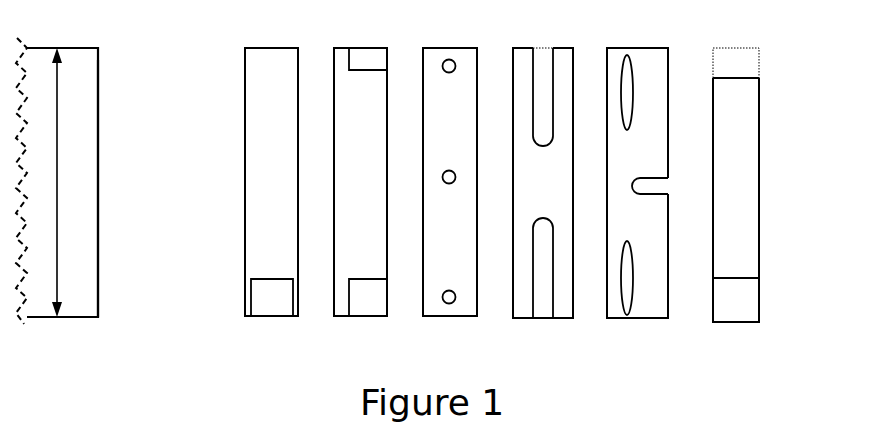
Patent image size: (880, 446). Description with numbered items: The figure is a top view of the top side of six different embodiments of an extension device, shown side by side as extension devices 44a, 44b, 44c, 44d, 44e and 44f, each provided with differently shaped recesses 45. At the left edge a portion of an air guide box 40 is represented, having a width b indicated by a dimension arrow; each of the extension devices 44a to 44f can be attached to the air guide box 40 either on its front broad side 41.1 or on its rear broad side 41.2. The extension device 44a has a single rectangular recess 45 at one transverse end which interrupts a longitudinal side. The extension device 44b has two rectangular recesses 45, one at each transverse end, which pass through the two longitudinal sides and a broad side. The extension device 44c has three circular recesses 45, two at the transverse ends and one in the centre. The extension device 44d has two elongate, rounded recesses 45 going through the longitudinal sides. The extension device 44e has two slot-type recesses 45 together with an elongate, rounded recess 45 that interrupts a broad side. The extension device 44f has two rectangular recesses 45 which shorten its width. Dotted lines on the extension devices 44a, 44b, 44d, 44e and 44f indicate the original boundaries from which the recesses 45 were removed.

The air guide box 40 is at (79, 46).
The front broad side 41.1 is at (100, 305).
The rear broad side 41.2 is at (137, 361).
The extension device 44a is at (272, 47).
The extension device 44b is at (343, 46).
The extension device 44c is at (449, 47).
The extension device 44d is at (522, 45).
The extension device 44e is at (634, 47).
The extension device 44f is at (727, 78).
The recess 45 is at (443, 67).